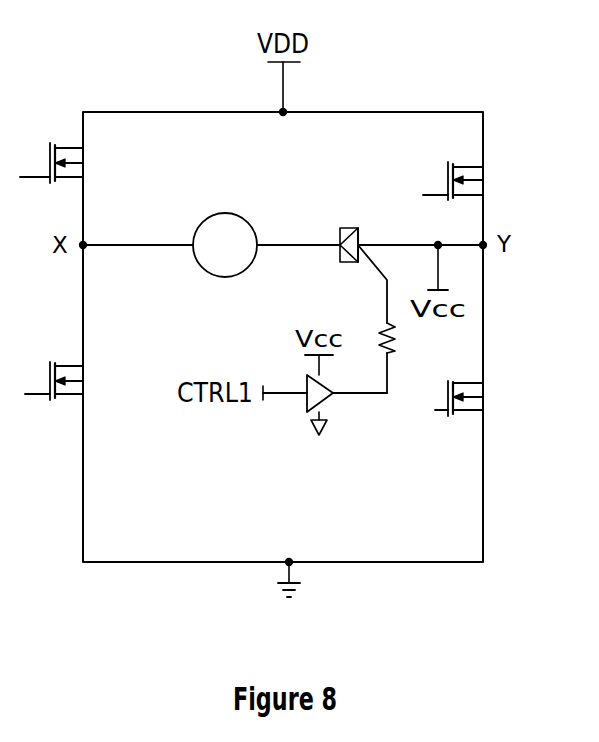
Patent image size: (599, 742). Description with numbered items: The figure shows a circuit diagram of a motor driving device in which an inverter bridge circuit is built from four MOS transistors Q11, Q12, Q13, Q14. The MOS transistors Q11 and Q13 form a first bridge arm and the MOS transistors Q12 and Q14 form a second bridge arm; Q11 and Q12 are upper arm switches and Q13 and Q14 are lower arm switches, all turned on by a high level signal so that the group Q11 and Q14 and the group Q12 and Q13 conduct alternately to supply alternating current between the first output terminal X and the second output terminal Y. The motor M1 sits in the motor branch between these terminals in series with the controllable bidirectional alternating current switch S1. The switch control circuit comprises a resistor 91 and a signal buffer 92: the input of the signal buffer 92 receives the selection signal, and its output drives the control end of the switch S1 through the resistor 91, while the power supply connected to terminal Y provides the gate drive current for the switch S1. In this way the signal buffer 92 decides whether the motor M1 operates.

The MOS transistor Q11 is at (82, 163).
The MOS transistor Q12 is at (485, 181).
The MOS transistor Q13 is at (85, 381).
The MOS transistor Q14 is at (490, 398).
The motor M1 is at (225, 245).
The controllable bidirectional alternating current switch S1 is at (358, 229).
The resistor 91 is at (393, 327).
The signal buffer 92 is at (330, 405).